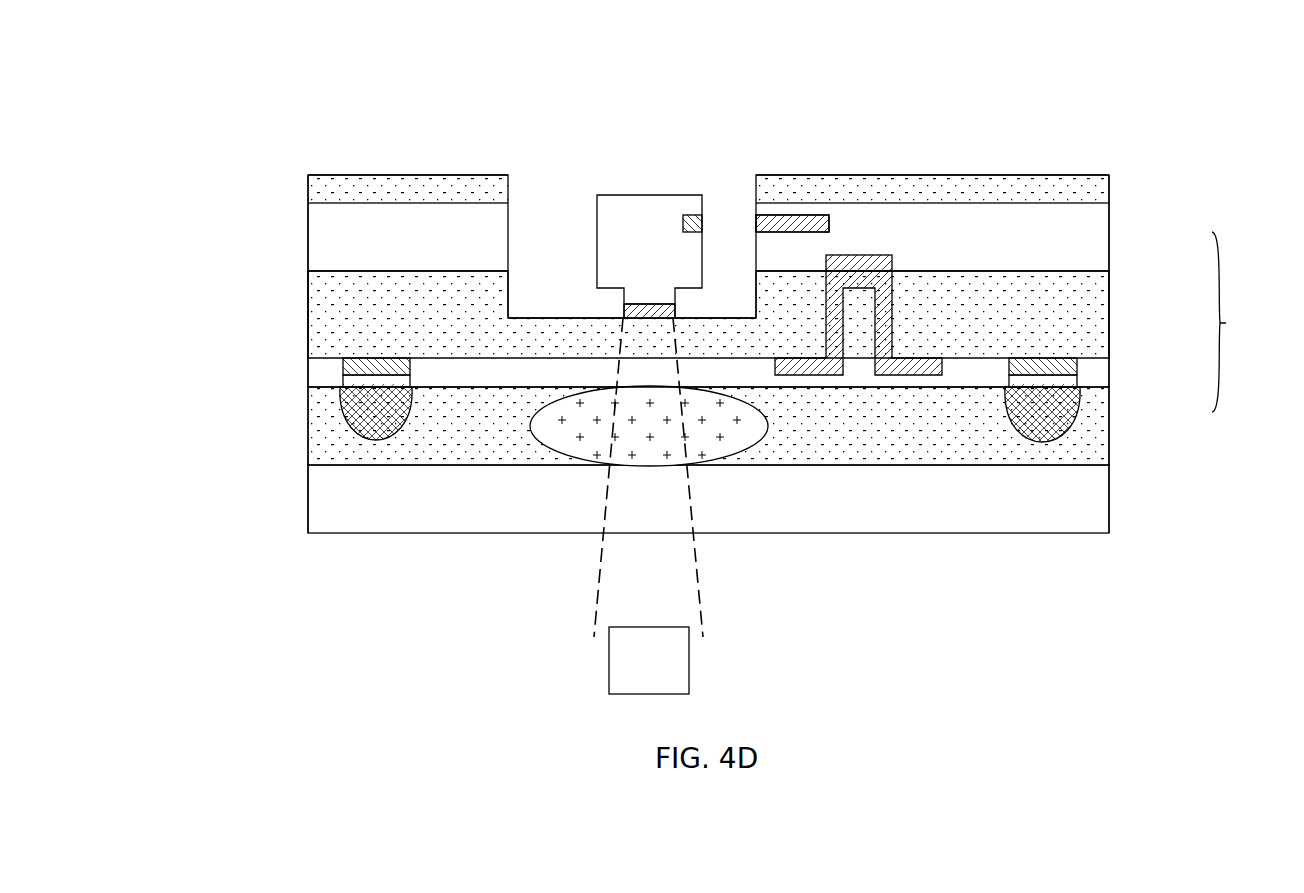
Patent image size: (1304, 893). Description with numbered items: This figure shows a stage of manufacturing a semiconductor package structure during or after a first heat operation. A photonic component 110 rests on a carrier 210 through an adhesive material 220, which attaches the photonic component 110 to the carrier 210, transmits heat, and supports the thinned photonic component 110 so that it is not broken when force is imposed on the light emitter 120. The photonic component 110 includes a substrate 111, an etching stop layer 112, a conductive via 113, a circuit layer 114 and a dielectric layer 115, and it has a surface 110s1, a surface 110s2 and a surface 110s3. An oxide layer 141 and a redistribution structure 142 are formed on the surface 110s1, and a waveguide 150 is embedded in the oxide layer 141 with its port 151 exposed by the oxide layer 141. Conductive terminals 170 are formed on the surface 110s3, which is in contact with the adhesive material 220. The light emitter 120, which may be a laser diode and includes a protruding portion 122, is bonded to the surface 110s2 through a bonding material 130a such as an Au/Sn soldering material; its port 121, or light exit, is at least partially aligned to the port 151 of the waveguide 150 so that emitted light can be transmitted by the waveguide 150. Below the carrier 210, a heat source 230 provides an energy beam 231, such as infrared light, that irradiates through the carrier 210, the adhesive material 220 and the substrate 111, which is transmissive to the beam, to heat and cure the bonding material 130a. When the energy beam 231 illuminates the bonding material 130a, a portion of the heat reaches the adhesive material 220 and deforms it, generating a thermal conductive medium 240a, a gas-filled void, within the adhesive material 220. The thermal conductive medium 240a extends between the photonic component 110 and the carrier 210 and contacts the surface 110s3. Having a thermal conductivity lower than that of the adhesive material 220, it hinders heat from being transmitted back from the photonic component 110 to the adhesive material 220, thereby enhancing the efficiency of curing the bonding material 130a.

The photonic component 110 is at (792, 322).
The surface of photonic component 110s1 is at (338, 273).
The surface of photonic component 110s2 is at (553, 318).
The surface of photonic component 110s3 is at (327, 387).
The substrate 111 is at (1093, 325).
The etching stop layer 112 is at (880, 258).
The conductive via 113 is at (882, 305).
The circuit layer 114 is at (1065, 370).
The dielectric layer 115 is at (1093, 380).
The light emitter 120 is at (603, 207).
The port 121 is at (699, 223).
The protruding portion 122 is at (652, 295).
The bonding material 130a is at (645, 307).
The oxide layer 141 is at (1093, 213).
The redistribution structure 142 is at (1093, 178).
The waveguide 150 is at (808, 223).
The port 151 is at (772, 223).
The conductive terminals 170 is at (363, 402).
The carrier 210 is at (332, 506).
The adhesive material 220 is at (332, 456).
The heat source 230 is at (630, 672).
The energy beam 231 is at (597, 578).
The thermal conductive medium 240a is at (738, 430).